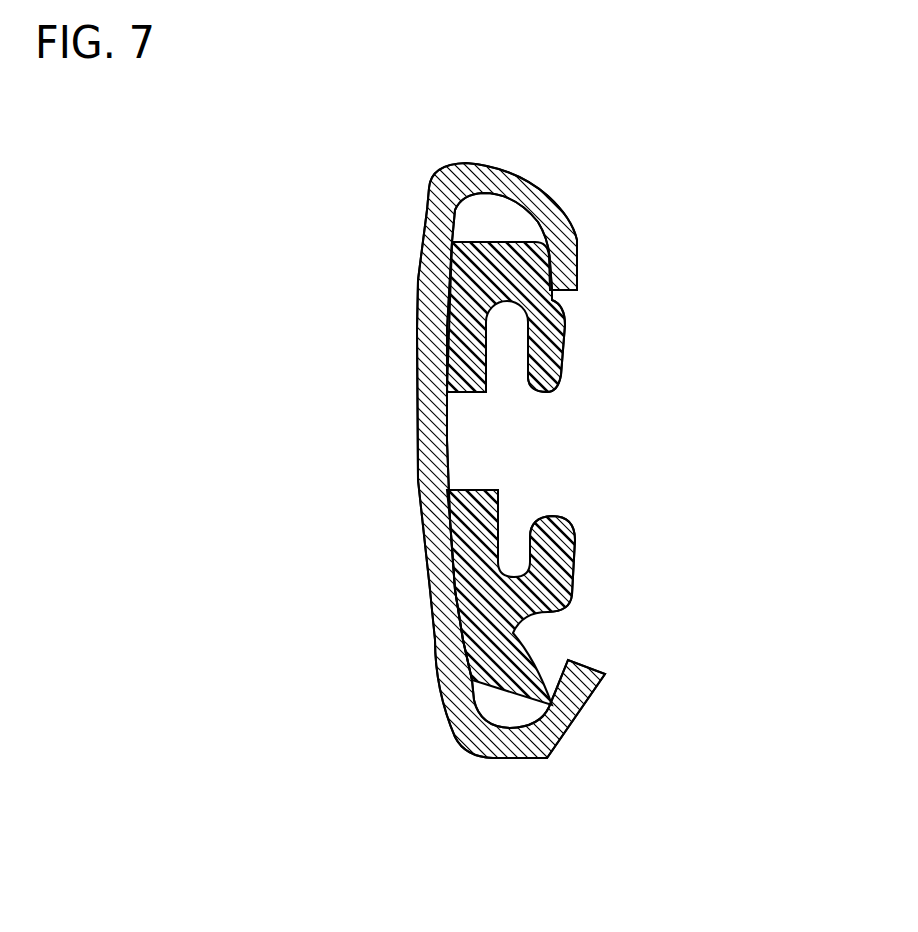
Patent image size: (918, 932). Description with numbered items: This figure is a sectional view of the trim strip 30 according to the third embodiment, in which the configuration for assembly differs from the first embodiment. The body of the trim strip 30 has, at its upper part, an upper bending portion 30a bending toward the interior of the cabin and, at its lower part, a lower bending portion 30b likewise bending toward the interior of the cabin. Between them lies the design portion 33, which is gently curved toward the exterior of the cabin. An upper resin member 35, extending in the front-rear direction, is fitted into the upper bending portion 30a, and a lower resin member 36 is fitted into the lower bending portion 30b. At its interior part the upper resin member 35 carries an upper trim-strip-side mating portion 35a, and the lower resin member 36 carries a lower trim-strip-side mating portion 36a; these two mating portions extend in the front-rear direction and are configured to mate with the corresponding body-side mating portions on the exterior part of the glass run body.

The trim strip 30 is at (416, 509).
The upper bending portion 30a is at (518, 176).
The lower bending portion 30b is at (535, 760).
The design portion 33 is at (415, 337).
The upper resin member 35 is at (482, 241).
The upper trim-strip-side mating portion 35a is at (563, 357).
The lower resin member 36 is at (505, 688).
The lower trim-strip-side mating portion 36a is at (577, 545).